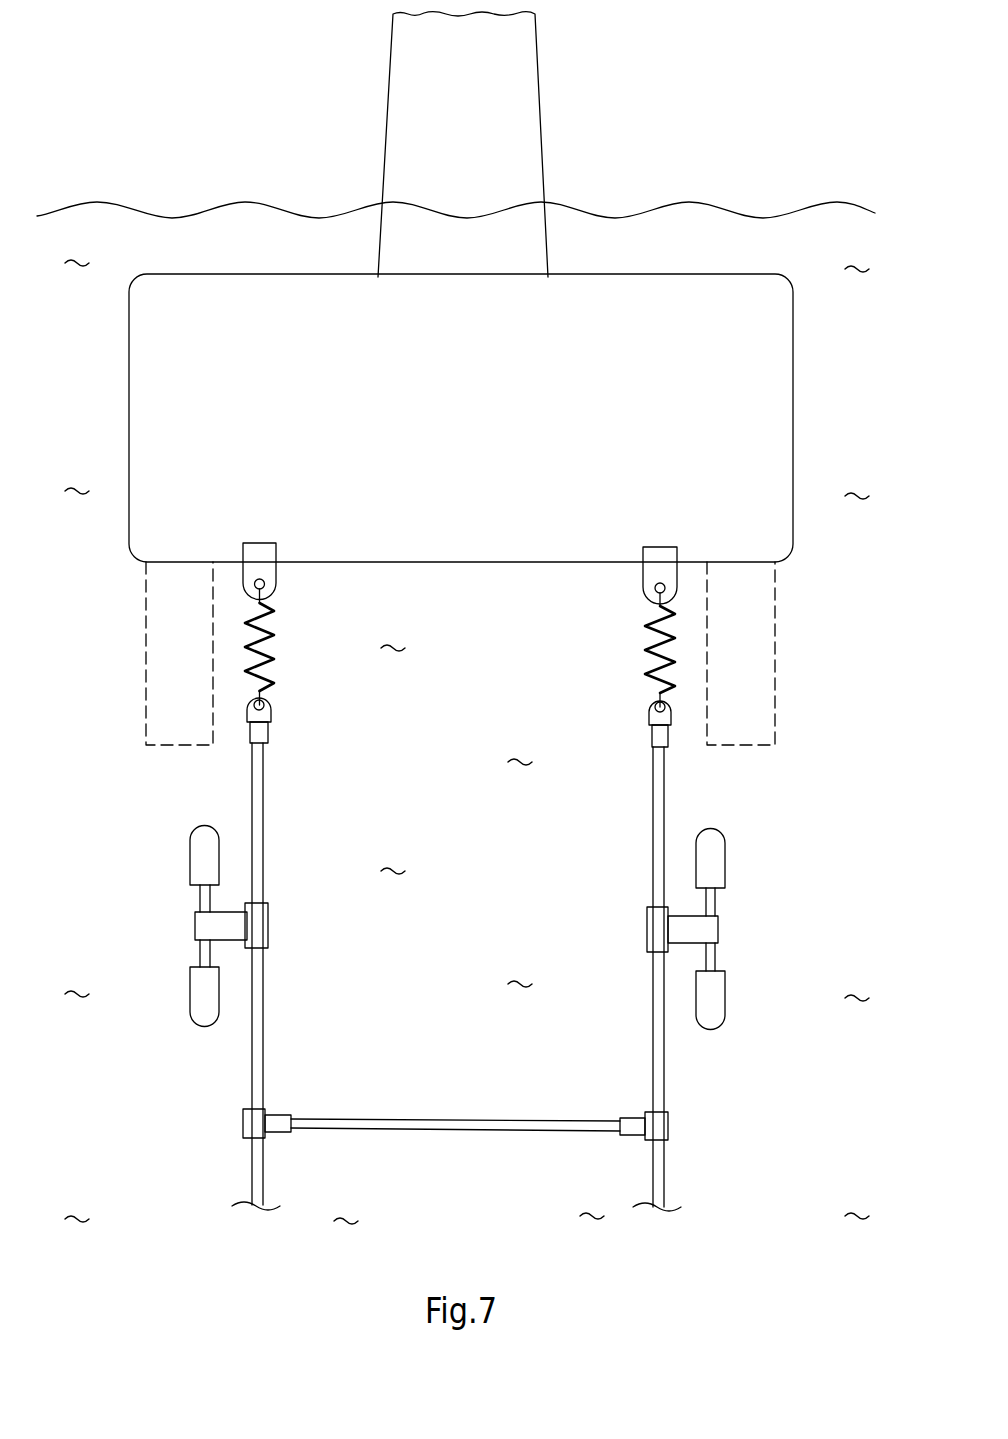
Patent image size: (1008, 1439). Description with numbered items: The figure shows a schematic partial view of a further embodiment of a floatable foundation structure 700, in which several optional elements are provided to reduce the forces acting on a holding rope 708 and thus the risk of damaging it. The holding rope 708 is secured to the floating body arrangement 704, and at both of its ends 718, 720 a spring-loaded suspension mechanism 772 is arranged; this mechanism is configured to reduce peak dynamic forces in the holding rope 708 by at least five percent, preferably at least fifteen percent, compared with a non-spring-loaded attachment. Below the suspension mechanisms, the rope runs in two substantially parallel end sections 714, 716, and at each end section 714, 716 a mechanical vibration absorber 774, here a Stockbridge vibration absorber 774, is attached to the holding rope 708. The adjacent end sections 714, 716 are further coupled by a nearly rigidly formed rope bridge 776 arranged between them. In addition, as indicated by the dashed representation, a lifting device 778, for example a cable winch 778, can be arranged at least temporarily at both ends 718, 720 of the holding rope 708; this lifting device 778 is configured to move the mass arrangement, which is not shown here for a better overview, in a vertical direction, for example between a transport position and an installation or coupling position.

The floatable foundation structure 700 is at (803, 97).
The floating body arrangement 704 is at (141, 393).
The holding rope 708 is at (258, 1035).
The end section of the holding rope 714 is at (180, 788).
The end section of the holding rope 716 is at (738, 788).
The end of the holding rope 718 is at (278, 738).
The end of the holding rope 720 is at (642, 738).
The spring-loaded suspension mechanism 772 is at (273, 642).
The mechanical vibration absorber 774 is at (201, 860).
The rope bridge 776 is at (465, 1123).
The lifting device 778 is at (156, 655).